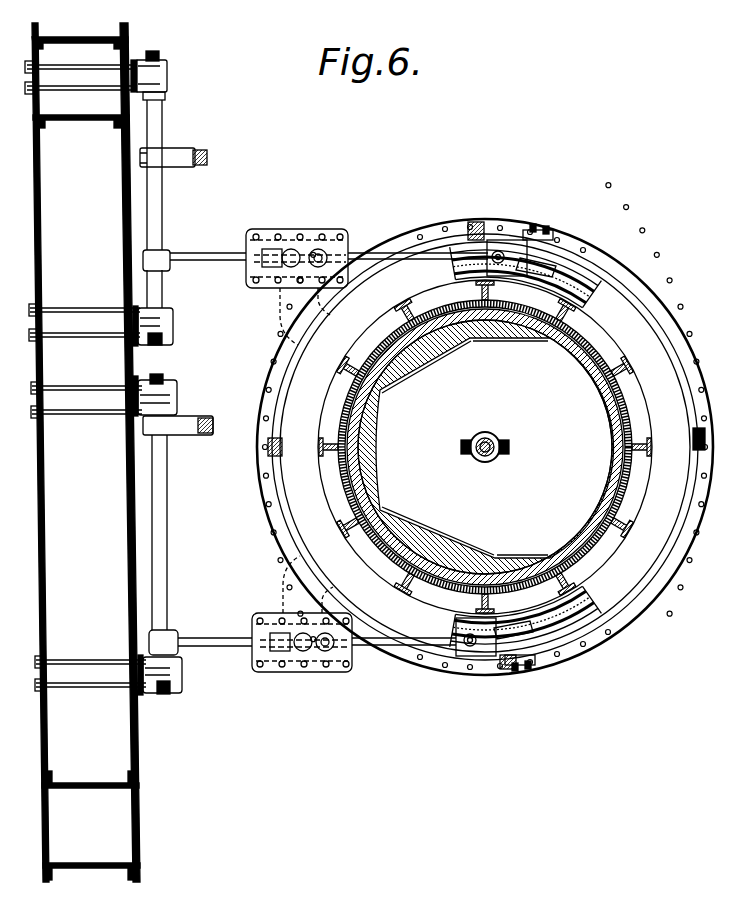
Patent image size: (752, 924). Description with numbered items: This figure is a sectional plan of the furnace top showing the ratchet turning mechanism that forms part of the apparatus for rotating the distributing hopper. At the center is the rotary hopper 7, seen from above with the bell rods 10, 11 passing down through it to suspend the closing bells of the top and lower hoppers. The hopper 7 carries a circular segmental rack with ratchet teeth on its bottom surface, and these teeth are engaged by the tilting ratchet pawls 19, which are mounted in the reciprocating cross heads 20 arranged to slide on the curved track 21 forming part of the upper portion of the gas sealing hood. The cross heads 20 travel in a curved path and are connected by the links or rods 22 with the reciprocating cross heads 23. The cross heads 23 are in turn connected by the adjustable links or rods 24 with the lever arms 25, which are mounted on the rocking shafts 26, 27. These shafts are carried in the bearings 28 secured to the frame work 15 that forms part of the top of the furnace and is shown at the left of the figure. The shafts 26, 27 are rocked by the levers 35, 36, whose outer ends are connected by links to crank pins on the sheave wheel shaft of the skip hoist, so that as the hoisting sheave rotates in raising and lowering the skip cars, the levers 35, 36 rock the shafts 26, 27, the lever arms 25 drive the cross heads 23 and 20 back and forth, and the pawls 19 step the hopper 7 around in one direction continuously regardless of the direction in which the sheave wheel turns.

The rotary hopper 7 is at (485, 447).
The bell rod 10 is at (485, 436).
The bell rod 11 is at (485, 462).
The frame work 15 is at (85, 452).
The tilting ratchet pawl 19 is at (552, 236).
The reciprocating cross head 20 is at (576, 266).
The curved track 21 is at (583, 284).
The link 22 is at (413, 254).
The reciprocating cross head 23 is at (298, 250).
The adjustable link 24 is at (224, 254).
The lever arm 25 is at (163, 268).
The rocking shaft 26 is at (168, 538).
The rocking shaft 27 is at (163, 217).
The bearing 28 is at (173, 338).
The lever 35 is at (213, 424).
The lever 36 is at (208, 157).